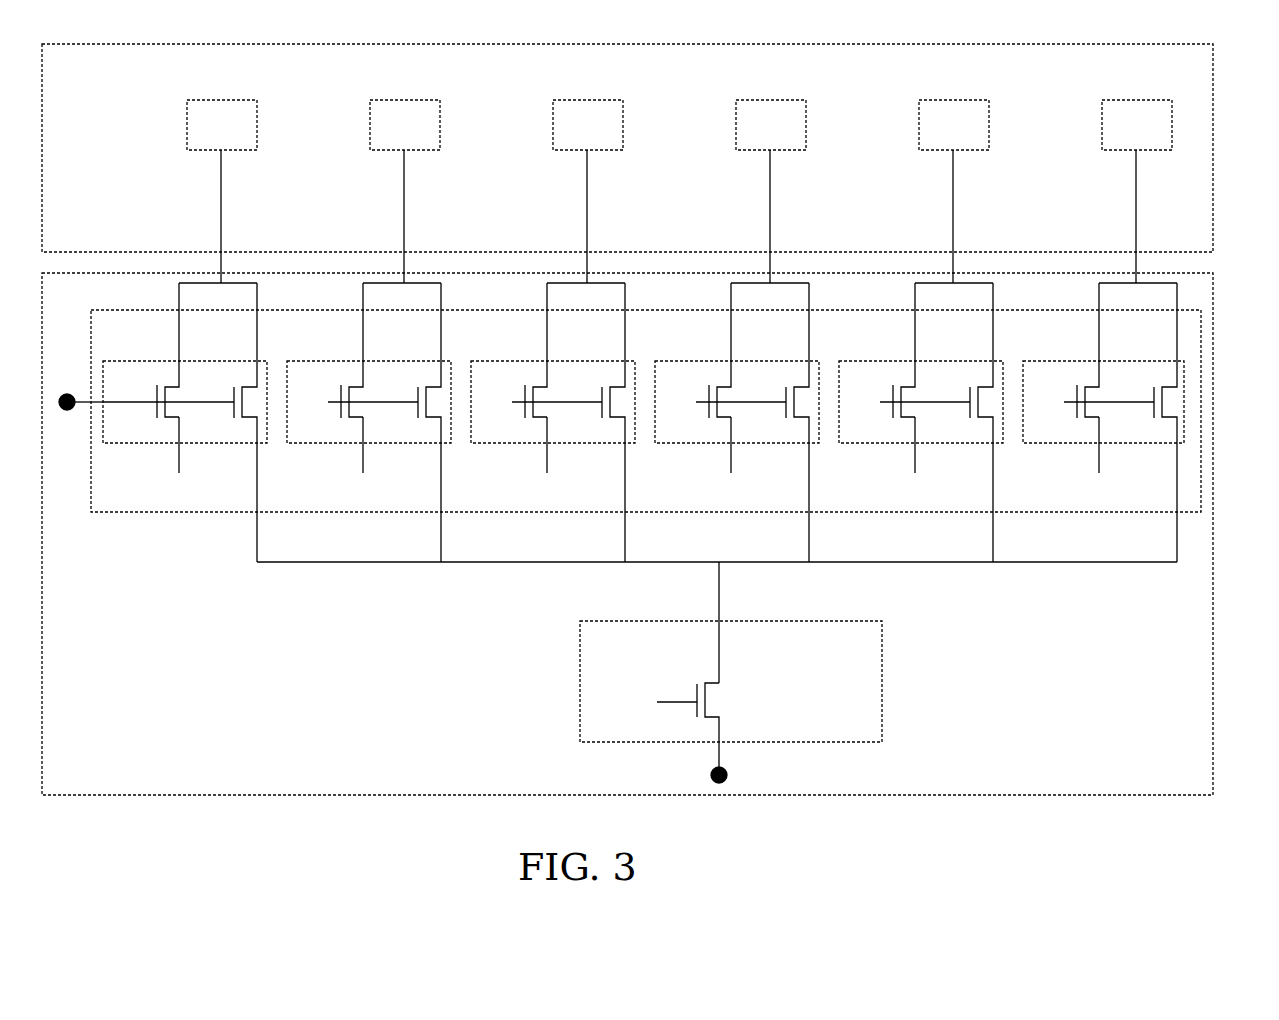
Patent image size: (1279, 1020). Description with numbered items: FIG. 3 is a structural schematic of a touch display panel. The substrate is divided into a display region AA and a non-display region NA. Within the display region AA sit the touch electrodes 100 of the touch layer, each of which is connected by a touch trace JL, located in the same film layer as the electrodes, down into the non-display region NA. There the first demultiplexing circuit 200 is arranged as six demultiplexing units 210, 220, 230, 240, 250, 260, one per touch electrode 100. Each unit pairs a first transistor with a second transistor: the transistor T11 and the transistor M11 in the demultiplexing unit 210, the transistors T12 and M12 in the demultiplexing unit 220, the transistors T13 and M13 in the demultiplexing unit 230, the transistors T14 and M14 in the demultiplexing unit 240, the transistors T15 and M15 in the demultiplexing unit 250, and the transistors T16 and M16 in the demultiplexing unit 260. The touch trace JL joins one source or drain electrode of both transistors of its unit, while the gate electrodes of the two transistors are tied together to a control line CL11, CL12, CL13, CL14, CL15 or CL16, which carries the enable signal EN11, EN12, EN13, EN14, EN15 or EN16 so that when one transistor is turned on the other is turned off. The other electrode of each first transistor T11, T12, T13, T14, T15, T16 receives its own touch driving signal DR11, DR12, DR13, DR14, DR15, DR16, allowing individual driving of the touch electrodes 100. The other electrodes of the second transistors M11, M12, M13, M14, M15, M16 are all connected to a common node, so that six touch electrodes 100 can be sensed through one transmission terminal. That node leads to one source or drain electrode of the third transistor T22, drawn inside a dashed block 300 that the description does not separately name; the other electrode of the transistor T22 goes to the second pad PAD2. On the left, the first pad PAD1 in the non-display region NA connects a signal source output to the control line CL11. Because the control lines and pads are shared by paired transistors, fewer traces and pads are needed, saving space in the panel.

The touch electrode 100 is at (806, 122).
The touch trace JL is at (770, 222).
The display region AA is at (1213, 172).
The non-display region NA is at (1212, 584).
The first demultiplexing circuit 200 is at (1011, 310).
The demultiplexing unit 210 is at (120, 361).
The demultiplexing unit 220 is at (304, 361).
The demultiplexing unit 230 is at (488, 361).
The demultiplexing unit 240 is at (672, 361).
The demultiplexing unit 250 is at (856, 361).
The demultiplexing unit 260 is at (1040, 361).
The switching block 300 is at (790, 621).
The first pad PAD1 is at (70, 412).
The second pad PAD2 is at (725, 768).
The transistor T11 is at (163, 350).
The transistor T12 is at (347, 350).
The transistor T13 is at (531, 350).
The transistor T14 is at (715, 350).
The transistor T15 is at (899, 350).
The transistor T16 is at (1083, 350).
The transistor M11 is at (240, 422).
The transistor M12 is at (424, 422).
The transistor M13 is at (608, 422).
The transistor M14 is at (792, 422).
The transistor M15 is at (976, 422).
The transistor M16 is at (1160, 422).
The enable signal EN11 is at (169, 393).
The enable signal EN12 is at (353, 402).
The enable signal EN13 is at (537, 402).
The enable signal EN14 is at (721, 402).
The enable signal EN15 is at (905, 402).
The enable signal EN16 is at (1089, 402).
The control line CL11 is at (157, 407).
The control line CL12 is at (341, 407).
The control line CL13 is at (525, 407).
The control line CL14 is at (709, 407).
The control line CL15 is at (893, 407).
The control line CL16 is at (1077, 407).
The touch driving signal DR11 is at (180, 454).
The touch driving signal DR12 is at (364, 454).
The touch driving signal DR13 is at (548, 454).
The touch driving signal DR14 is at (732, 454).
The touch driving signal DR15 is at (916, 454).
The touch driving signal DR16 is at (1100, 454).
The transistor T22 is at (700, 725).